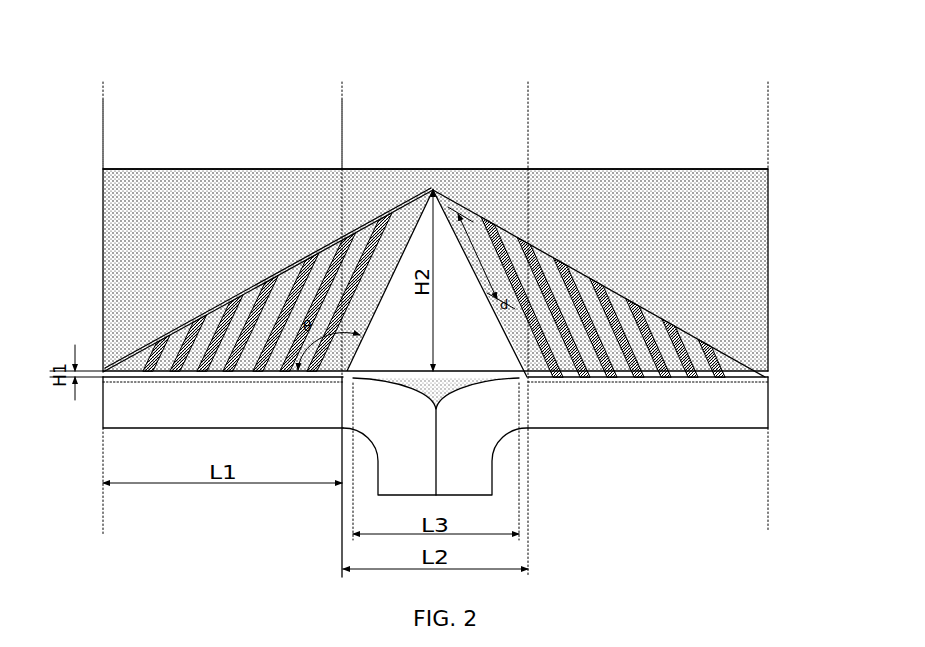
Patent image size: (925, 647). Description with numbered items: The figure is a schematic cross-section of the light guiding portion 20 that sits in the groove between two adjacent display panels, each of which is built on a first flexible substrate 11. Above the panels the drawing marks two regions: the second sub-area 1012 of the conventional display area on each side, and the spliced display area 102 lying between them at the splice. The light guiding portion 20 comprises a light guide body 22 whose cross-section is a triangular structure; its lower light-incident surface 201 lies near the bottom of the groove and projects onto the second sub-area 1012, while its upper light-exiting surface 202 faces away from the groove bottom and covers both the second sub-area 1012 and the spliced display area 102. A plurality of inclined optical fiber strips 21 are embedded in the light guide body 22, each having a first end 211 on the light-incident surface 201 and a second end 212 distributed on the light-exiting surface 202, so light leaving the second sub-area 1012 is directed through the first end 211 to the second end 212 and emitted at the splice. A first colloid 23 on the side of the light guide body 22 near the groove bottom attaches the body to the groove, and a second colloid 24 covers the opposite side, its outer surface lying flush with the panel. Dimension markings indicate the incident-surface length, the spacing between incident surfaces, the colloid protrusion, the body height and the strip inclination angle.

The first flexible substrate 11 is at (745, 413).
The light guiding portion 20 is at (866, 260).
The optical fiber strips 21 is at (600, 338).
The light guide body 22 is at (543, 317).
The first colloid 23 is at (530, 364).
The second colloid 24 is at (718, 242).
The spliced display area 102 is at (432, 115).
The second sub-area 1012 is at (226, 115).
The light-incident surface 201 is at (221, 384).
The light-exiting surface 202 is at (267, 280).
The first end 211 is at (527, 379).
The second end 212 is at (560, 262).